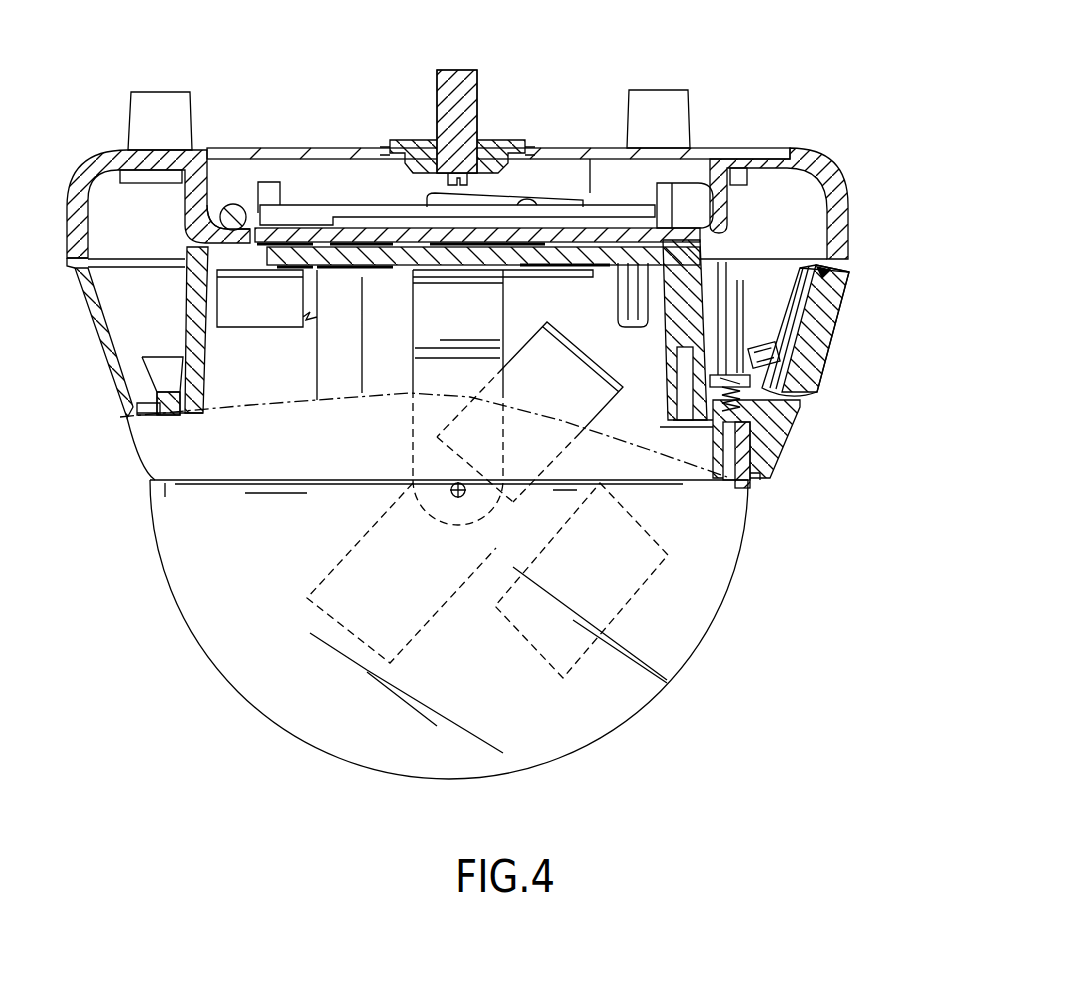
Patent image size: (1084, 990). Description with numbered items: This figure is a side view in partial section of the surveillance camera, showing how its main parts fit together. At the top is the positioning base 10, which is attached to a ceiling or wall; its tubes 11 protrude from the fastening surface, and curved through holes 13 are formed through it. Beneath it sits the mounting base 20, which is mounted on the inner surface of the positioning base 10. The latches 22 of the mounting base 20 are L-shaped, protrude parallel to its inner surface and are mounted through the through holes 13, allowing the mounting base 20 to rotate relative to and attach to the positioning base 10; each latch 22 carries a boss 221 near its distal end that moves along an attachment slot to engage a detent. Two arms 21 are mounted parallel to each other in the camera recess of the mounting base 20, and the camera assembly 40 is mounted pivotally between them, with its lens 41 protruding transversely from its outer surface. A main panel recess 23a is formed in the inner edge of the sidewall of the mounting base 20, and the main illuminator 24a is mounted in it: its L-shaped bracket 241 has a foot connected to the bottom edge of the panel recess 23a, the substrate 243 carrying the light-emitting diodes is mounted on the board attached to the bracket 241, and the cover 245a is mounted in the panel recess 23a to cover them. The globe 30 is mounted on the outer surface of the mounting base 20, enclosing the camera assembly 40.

The positioning base 10 is at (803, 162).
The tubes 11 is at (163, 102).
The through holes 13 is at (695, 222).
The mounting base 20 is at (757, 417).
The arms 21 is at (437, 385).
The latches 22 is at (240, 212).
The boss 221 is at (207, 239).
The main panel recess 23a is at (710, 331).
The main illuminator 24a is at (815, 258).
The bracket 241 is at (770, 317).
The substrate 243 is at (815, 278).
The cover 245a is at (835, 320).
The globe 30 is at (740, 540).
The camera assembly 40 is at (546, 360).
The lens 41 is at (648, 533).